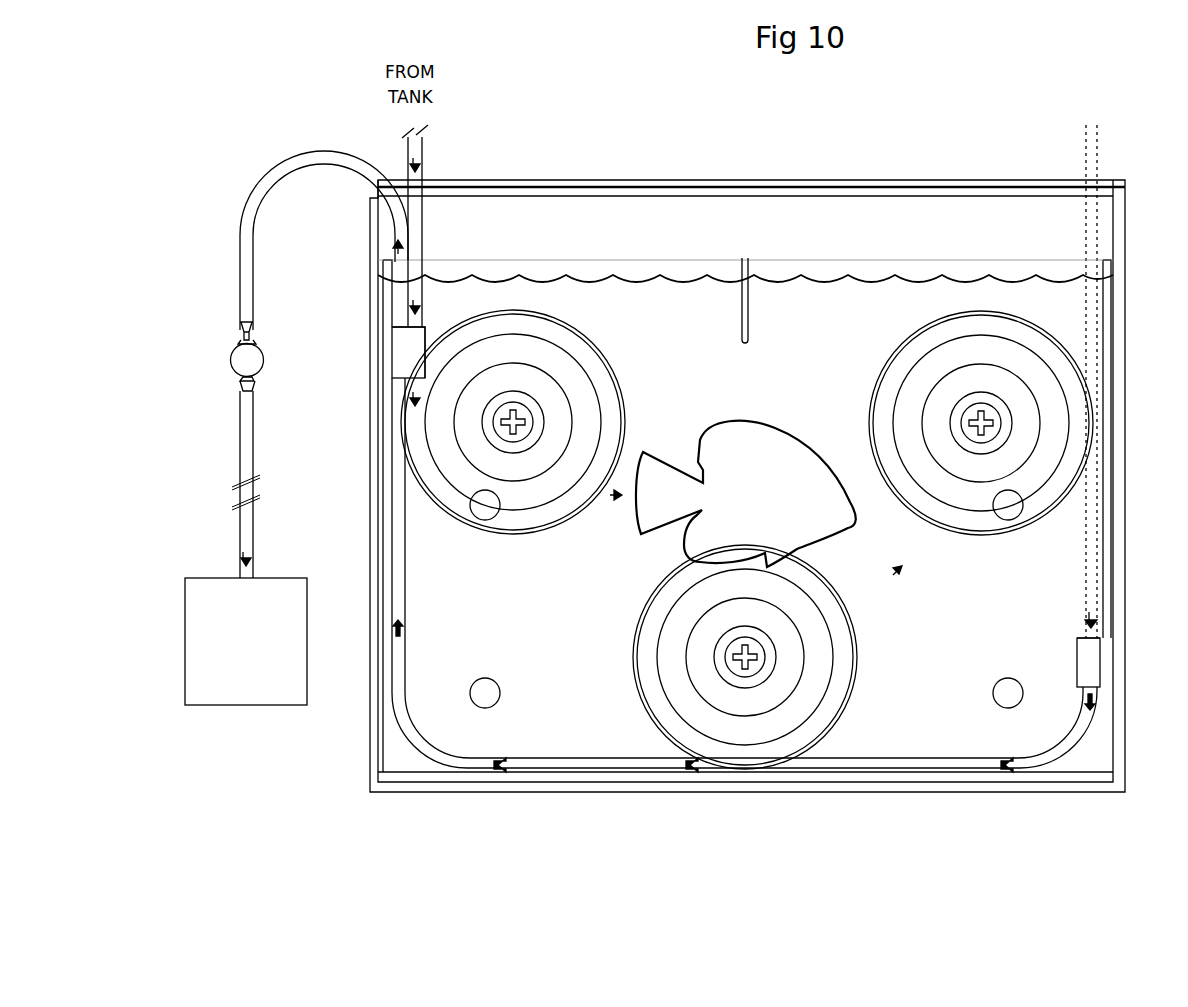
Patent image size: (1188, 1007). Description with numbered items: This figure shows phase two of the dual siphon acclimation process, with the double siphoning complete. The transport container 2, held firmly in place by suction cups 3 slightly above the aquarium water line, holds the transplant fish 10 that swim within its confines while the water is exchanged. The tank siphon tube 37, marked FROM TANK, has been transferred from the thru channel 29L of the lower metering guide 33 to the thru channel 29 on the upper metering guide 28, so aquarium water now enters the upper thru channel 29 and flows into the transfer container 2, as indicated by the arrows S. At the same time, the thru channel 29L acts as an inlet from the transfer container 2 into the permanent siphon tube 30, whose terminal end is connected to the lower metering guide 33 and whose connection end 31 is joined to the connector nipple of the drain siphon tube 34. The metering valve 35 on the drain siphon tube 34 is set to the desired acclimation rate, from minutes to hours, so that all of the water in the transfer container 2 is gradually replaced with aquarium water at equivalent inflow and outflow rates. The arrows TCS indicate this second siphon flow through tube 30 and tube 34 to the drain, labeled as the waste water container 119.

The transport container 2 is at (1122, 300).
The suction cups 3 is at (616, 386).
The transplant fish 10 is at (780, 507).
The upper metering guide 28 is at (426, 332).
The thru channel 29 is at (430, 310).
The thru channel 29L is at (1096, 637).
The siphon tube 30 is at (313, 155).
The connection end 31 is at (222, 320).
The lower metering guide 33 is at (1095, 665).
The drain siphon tube 34 is at (240, 440).
The metering valve 35 is at (230, 363).
The tank siphon tube 37 is at (425, 146).
The waste water container 119 is at (252, 706).
The water supply S is at (425, 162).
The second siphon flow arrows TCS is at (246, 276).